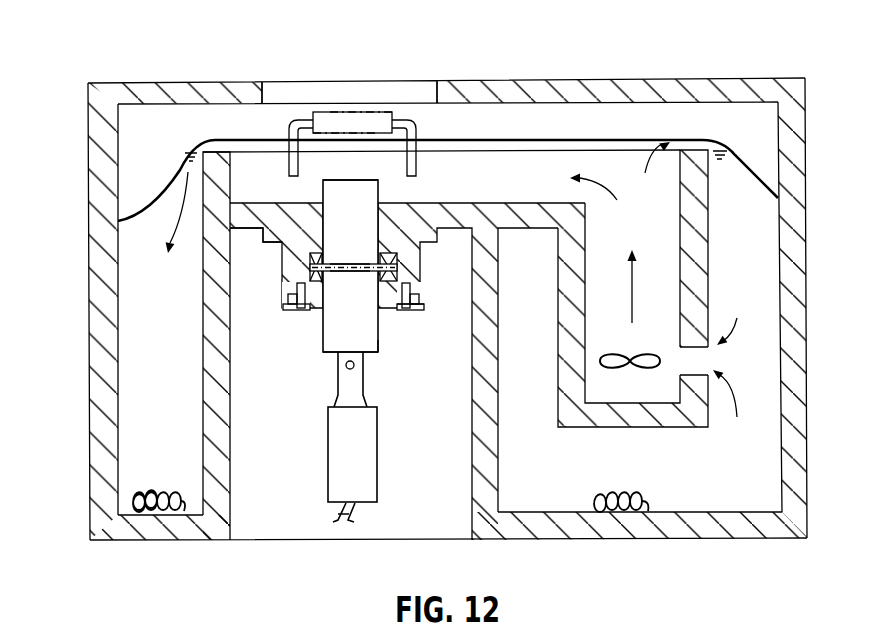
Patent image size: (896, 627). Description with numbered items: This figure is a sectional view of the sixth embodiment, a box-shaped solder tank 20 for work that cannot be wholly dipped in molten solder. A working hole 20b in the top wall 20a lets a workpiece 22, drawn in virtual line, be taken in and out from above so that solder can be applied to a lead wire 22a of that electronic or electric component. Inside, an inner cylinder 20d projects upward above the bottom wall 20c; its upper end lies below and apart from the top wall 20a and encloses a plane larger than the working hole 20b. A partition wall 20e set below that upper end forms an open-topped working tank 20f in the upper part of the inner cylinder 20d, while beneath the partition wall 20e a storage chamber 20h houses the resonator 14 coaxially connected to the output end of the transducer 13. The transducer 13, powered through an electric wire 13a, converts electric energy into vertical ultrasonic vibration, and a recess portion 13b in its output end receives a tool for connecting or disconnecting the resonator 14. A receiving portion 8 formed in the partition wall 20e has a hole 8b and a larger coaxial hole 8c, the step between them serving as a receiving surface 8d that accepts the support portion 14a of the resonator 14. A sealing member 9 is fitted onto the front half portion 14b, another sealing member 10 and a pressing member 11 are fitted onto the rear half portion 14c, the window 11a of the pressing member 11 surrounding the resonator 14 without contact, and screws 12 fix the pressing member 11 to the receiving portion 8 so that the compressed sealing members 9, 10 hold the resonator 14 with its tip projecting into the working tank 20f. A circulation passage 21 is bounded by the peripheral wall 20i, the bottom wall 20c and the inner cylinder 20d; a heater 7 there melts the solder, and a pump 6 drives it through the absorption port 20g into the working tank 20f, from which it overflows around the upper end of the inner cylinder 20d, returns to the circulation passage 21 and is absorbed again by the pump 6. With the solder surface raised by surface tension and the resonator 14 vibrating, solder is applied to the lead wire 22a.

The pump 6 is at (614, 365).
The heater 7 is at (182, 515).
The receiving portion 8 is at (220, 217).
The hole 8b is at (410, 258).
The hole 8c is at (288, 298).
The receiving surface 8d is at (300, 250).
The sealing member 9 is at (400, 268).
The sealing member 10 is at (420, 294).
The pressing member 11 is at (398, 316).
The window 11a is at (382, 352).
The screws 12 is at (312, 278).
The transducer 13 is at (368, 460).
The electric wire 13a is at (357, 507).
The recess portion 13b is at (345, 369).
The resonator 14 is at (340, 234).
The support portion 14a is at (355, 268).
The front half portion 14b is at (323, 180).
The rear half portion 14c is at (372, 352).
The solder tank 20 is at (482, 310).
The top wall 20a is at (562, 82).
The working hole 20b is at (415, 97).
The bottom wall 20c is at (622, 532).
The inner cylinder 20d is at (715, 272).
The partition wall 20e is at (460, 207).
The working tank 20f is at (262, 152).
The absorption port 20g is at (718, 353).
The storage chamber 20h is at (238, 289).
The peripheral wall 20i is at (812, 290).
The circulation passage 21 is at (130, 336).
The workpiece 22 is at (338, 112).
The lead wire 22a is at (293, 118).